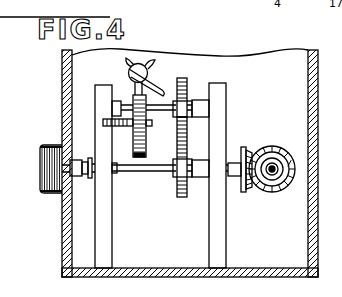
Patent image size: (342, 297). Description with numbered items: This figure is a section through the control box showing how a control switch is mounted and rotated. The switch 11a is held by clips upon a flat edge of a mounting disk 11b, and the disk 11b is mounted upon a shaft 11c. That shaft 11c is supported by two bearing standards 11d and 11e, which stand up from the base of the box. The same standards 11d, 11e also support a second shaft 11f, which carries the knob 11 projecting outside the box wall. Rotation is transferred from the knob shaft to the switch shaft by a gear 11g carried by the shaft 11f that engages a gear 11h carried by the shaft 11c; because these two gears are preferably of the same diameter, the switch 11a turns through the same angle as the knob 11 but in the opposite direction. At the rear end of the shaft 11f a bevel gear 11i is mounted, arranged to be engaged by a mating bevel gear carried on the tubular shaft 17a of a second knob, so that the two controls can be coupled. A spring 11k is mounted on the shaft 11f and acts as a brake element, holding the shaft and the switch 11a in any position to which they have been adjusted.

The knob 11 is at (41, 180).
The switch 11a is at (127, 67).
The mounting disk 11b is at (146, 141).
The shaft 11c is at (125, 100).
The bearing standard 11d is at (113, 234).
The bearing standard 11e is at (210, 238).
The shaft 11f is at (125, 171).
The gear 11g is at (185, 194).
The gear 11h is at (186, 80).
The bevel gear 11i is at (250, 148).
The spring 11k is at (88, 174).
The tubular shaft 17a is at (272, 193).